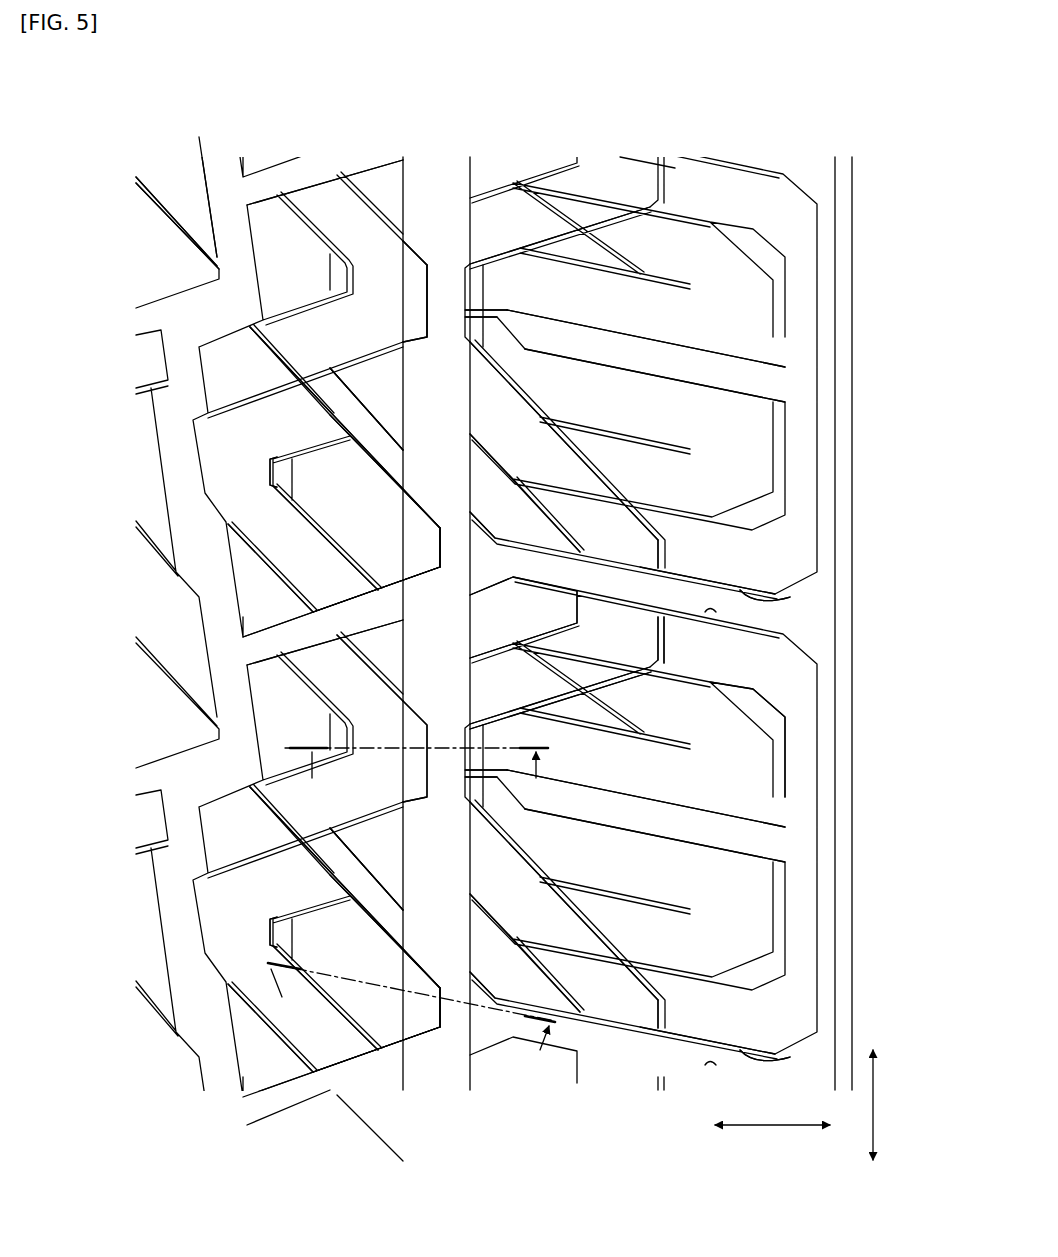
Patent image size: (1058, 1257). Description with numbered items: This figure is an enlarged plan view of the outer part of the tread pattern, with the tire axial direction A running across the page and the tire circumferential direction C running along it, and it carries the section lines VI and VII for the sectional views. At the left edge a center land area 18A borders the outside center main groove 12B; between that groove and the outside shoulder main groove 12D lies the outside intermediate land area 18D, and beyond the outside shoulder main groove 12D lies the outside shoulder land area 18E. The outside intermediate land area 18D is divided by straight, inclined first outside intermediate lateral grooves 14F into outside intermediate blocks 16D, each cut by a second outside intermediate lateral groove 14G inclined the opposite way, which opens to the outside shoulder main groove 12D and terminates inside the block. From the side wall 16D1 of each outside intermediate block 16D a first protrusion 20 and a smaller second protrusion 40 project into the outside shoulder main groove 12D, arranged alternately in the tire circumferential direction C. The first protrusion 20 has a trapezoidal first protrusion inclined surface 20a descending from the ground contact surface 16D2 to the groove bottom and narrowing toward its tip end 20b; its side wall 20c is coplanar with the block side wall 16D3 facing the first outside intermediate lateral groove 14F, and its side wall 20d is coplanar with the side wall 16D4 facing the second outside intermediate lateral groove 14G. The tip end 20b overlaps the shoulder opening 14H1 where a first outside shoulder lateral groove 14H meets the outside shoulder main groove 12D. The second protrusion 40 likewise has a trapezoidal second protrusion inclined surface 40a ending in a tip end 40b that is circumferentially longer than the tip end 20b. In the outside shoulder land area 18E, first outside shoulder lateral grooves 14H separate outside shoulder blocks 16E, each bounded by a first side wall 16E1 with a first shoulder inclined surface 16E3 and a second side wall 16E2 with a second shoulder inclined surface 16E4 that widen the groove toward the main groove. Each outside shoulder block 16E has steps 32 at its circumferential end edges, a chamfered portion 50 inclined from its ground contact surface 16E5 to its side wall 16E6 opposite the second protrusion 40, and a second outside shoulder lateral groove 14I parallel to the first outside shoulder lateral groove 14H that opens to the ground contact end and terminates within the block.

The center land area 18A is at (162, 168).
The outside center main groove 12B is at (222, 170).
The outside intermediate land area 18D is at (320, 163).
The outside shoulder main groove 12D is at (437, 176).
The outside shoulder land area 18E is at (632, 158).
The second protrusion 40 is at (440, 262).
The chamfered portion 50 is at (473, 287).
The outside shoulder block 16E is at (800, 300).
The second outside shoulder lateral groove 14I is at (725, 372).
The outside intermediate block 16D is at (219, 367).
The second protrusion inclined surface 40a is at (415, 305).
The side wall 16D1 is at (403, 392).
The tip end 40b is at (430, 293).
The second outside intermediate lateral groove 14G is at (338, 407).
The shoulder opening 14H1 is at (473, 553).
The second shoulder inclined surface 16E4 is at (473, 527).
The side wall 20d is at (425, 520).
The side wall 16D4 is at (383, 465).
The first protrusion inclined surface 20a is at (410, 534).
The ground contact surface 16D2 is at (383, 560).
The second side wall 16E2 is at (655, 567).
The first shoulder inclined surface 16E3 is at (488, 575).
The first side wall 16E1 is at (628, 600).
The step 32 is at (716, 612).
The first outside shoulder lateral groove 14H is at (760, 605).
The first outside intermediate lateral groove 14F is at (323, 620).
The side wall 20c is at (415, 583).
The tip end 20b is at (448, 565).
The first protrusion 20 is at (458, 570).
The side wall 16D3 is at (367, 640).
The side wall 16E6 is at (466, 695).
The ground contact surface 16E5 is at (750, 780).
The section line VII- VII is at (417, 775).
The section line VI- VI is at (410, 1012).
The tire axial direction A is at (772, 1137).
The tire circumferential direction C is at (883, 1105).